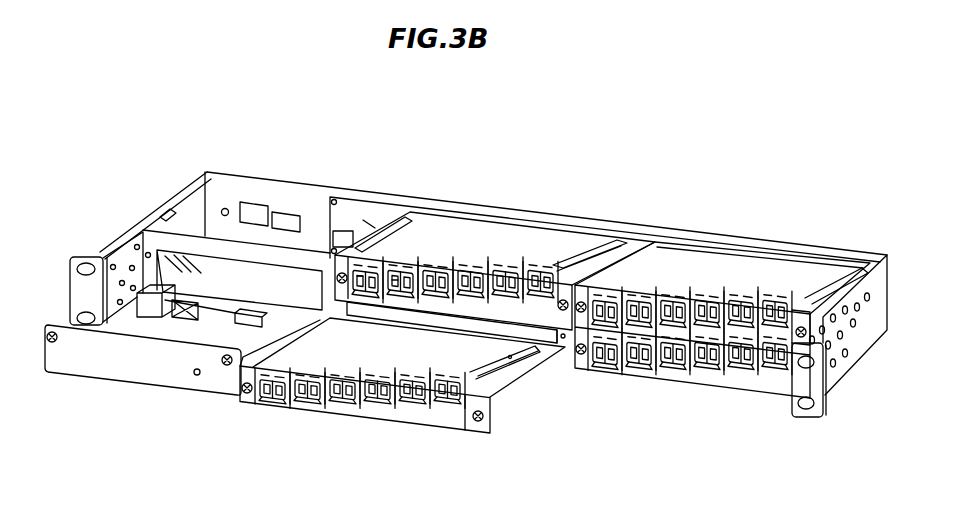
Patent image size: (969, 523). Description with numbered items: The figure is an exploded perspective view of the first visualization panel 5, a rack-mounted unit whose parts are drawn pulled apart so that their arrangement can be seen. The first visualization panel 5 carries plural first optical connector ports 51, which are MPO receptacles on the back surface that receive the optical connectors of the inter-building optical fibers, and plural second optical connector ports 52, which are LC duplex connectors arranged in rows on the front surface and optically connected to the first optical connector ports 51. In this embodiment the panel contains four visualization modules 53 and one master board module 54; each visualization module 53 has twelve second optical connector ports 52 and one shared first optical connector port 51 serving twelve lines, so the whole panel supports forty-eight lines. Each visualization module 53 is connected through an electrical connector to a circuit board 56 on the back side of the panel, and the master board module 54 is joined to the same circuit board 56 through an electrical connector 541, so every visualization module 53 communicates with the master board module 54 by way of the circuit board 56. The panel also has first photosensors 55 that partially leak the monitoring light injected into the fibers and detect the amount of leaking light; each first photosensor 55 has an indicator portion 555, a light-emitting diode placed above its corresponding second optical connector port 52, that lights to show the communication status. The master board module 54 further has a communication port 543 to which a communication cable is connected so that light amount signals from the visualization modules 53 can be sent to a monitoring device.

The first visualization panel 5 is at (357, 129).
The first optical connector port 51 is at (400, 325).
The second optical connector port 52 is at (433, 417).
The visualization module 53 is at (522, 233).
The master board module 54 is at (108, 368).
The first photosensor 55 is at (480, 402).
The circuit board 56 is at (350, 207).
The electrical connector 541 is at (250, 313).
The communication port 543 is at (152, 290).
The indicator portion 555 is at (405, 270).